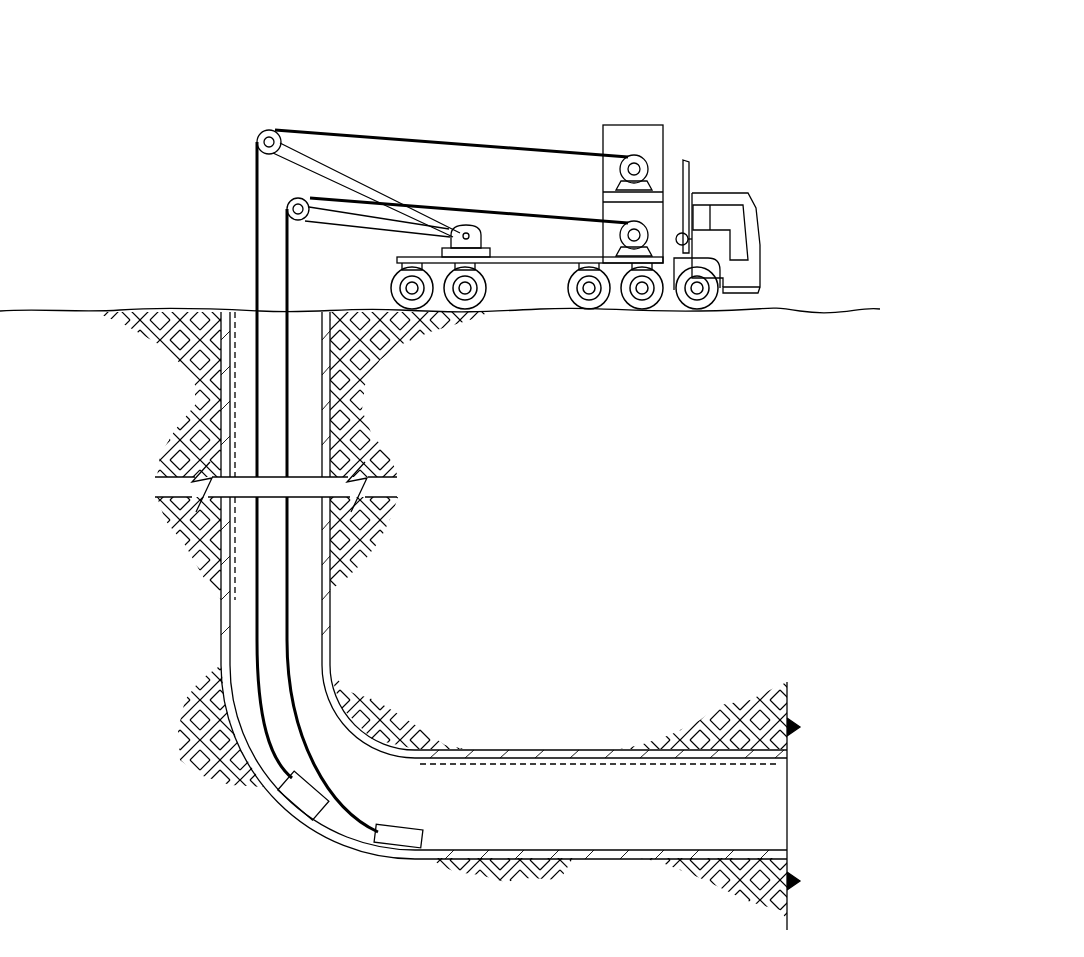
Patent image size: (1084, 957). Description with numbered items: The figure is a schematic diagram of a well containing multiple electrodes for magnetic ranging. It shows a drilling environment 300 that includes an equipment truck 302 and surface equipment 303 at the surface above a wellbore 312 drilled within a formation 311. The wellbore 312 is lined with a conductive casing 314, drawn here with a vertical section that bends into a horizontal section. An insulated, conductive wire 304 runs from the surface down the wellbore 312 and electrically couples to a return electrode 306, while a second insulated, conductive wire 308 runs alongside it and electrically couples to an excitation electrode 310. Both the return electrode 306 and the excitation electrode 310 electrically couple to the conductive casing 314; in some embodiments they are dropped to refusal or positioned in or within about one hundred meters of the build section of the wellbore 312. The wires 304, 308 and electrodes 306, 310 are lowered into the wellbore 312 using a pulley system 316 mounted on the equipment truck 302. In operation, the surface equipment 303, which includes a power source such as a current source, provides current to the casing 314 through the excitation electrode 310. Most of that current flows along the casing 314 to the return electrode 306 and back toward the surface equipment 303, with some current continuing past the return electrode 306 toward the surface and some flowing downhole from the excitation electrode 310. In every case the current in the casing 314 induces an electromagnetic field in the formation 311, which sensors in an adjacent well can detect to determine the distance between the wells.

The drilling environment 300 is at (796, 66).
The equipment truck 302 is at (735, 186).
The surface equipment 303 is at (632, 125).
The insulated, conductive wire 304 is at (257, 223).
The return electrode 306 is at (300, 792).
The insulated, conductive wire 308 is at (290, 277).
The excitation electrode 310 is at (400, 837).
The formation 311 is at (68, 589).
The wellbore 312 is at (243, 618).
The conductive casing 314 is at (225, 410).
The pulley system 316 is at (262, 134).